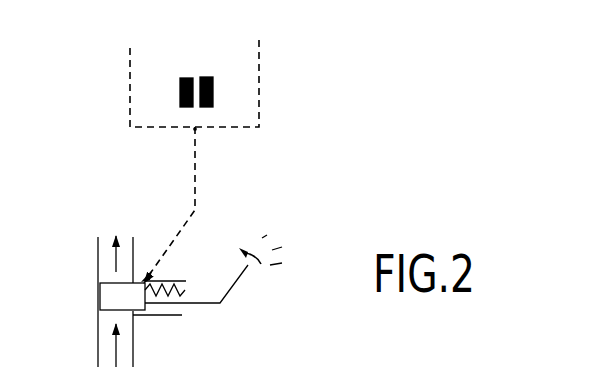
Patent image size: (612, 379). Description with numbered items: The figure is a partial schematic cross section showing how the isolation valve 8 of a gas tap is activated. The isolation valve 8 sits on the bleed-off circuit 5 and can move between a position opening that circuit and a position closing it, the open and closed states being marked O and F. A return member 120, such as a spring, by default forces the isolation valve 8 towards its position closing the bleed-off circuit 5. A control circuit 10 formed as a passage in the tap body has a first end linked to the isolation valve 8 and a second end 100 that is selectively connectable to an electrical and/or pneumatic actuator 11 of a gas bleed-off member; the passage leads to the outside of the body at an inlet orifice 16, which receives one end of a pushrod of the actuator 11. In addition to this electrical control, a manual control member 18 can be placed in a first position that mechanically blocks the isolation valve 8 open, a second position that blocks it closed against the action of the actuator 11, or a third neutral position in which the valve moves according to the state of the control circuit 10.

The bleed-off circuit 5 is at (98, 250).
The isolation valve 8 is at (150, 311).
The control circuit 10 is at (174, 236).
The actuator 11 is at (216, 95).
The inlet orifice 16 is at (200, 132).
The control member 18 is at (238, 283).
The second end of the control circuit 100 is at (190, 133).
The return member 120 is at (186, 280).